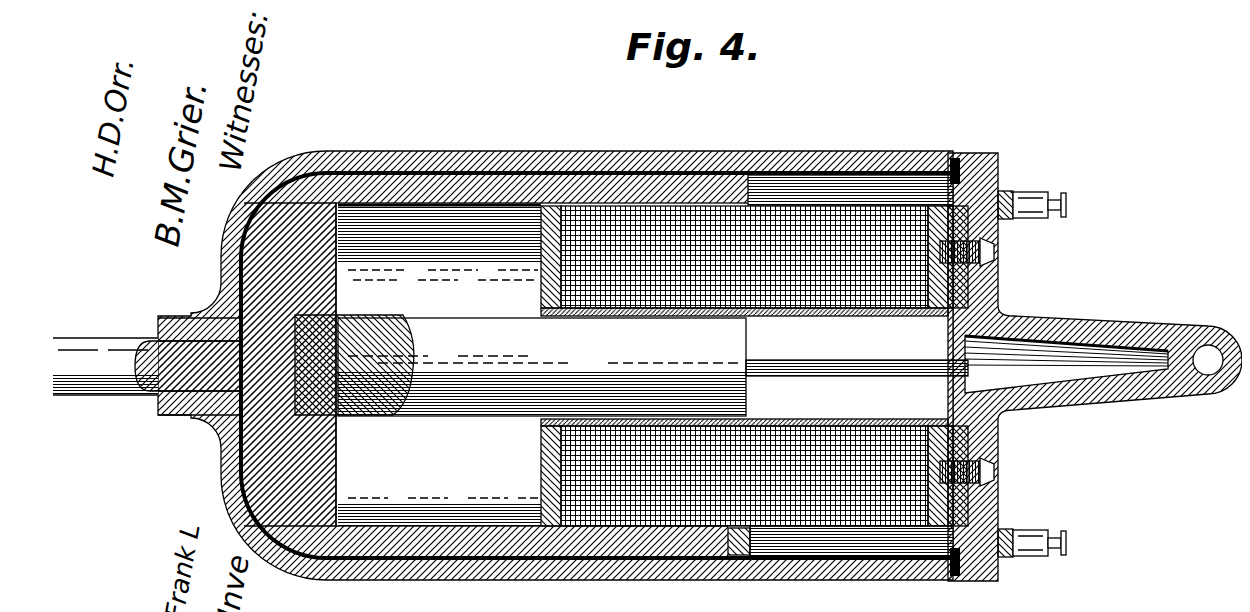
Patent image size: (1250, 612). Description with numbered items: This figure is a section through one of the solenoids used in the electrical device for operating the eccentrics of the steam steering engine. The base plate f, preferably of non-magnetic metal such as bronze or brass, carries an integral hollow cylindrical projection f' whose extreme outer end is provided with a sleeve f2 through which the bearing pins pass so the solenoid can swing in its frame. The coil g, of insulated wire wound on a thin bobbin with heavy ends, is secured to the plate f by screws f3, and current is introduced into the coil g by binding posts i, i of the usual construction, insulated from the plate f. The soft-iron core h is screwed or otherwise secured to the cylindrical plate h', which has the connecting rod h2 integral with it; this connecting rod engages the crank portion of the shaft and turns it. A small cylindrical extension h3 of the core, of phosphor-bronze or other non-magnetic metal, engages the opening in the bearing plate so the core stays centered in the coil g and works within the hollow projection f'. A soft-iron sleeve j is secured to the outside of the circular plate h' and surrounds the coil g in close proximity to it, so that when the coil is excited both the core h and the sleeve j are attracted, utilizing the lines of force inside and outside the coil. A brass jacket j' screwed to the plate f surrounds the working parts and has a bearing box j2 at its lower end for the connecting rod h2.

The sleeve j is at (555, 365).
The jacket j' is at (598, 393).
The bearing box j2 is at (178, 410).
The core h is at (520, 365).
The cylindrical plate h' is at (306, 364).
The connecting rod h2 is at (146, 381).
The cylindrical extension h3 is at (857, 382).
The coil g is at (747, 366).
The base plate f is at (1095, 367).
The cylindrical projection f' is at (1066, 343).
The sleeve f2 is at (1187, 376).
The screws f3 is at (975, 249).
The binding posts i is at (1032, 380).